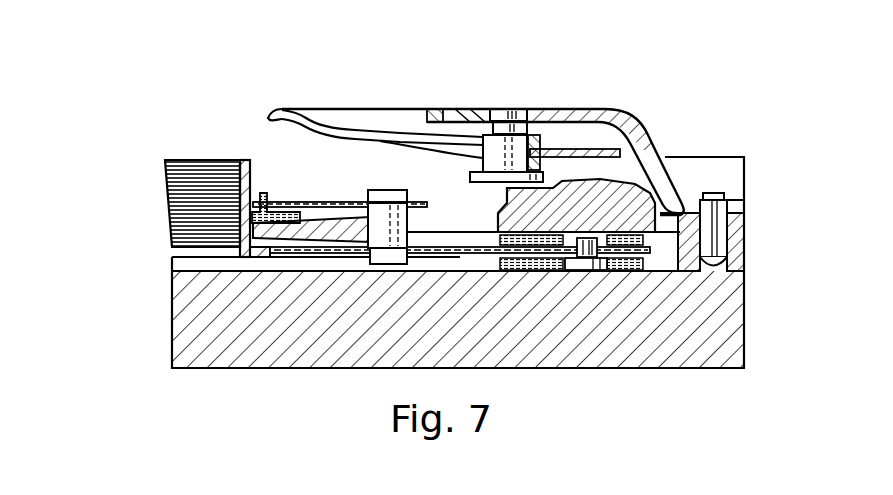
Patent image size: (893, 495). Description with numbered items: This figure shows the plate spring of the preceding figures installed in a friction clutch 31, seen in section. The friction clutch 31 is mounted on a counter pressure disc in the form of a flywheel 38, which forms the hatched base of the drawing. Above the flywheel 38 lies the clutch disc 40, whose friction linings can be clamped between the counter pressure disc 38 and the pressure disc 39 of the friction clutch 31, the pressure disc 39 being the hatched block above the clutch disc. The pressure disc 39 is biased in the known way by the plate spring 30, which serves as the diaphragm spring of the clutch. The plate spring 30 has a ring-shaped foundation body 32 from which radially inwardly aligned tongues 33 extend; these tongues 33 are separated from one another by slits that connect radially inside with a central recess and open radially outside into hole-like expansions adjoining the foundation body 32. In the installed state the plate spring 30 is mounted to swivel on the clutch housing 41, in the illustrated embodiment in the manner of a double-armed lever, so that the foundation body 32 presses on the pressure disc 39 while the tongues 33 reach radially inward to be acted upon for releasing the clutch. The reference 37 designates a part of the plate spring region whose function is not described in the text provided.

The plate spring 30 is at (597, 147).
The friction clutch 31 is at (632, 92).
The ring-shaped foundation body 32 is at (543, 138).
The tongues 33 is at (358, 128).
The lever tip 37 is at (278, 108).
The flywheel 38 is at (718, 317).
The pressure disc 39 is at (623, 190).
The clutch disc 40 is at (242, 158).
The clutch housing 41 is at (568, 120).